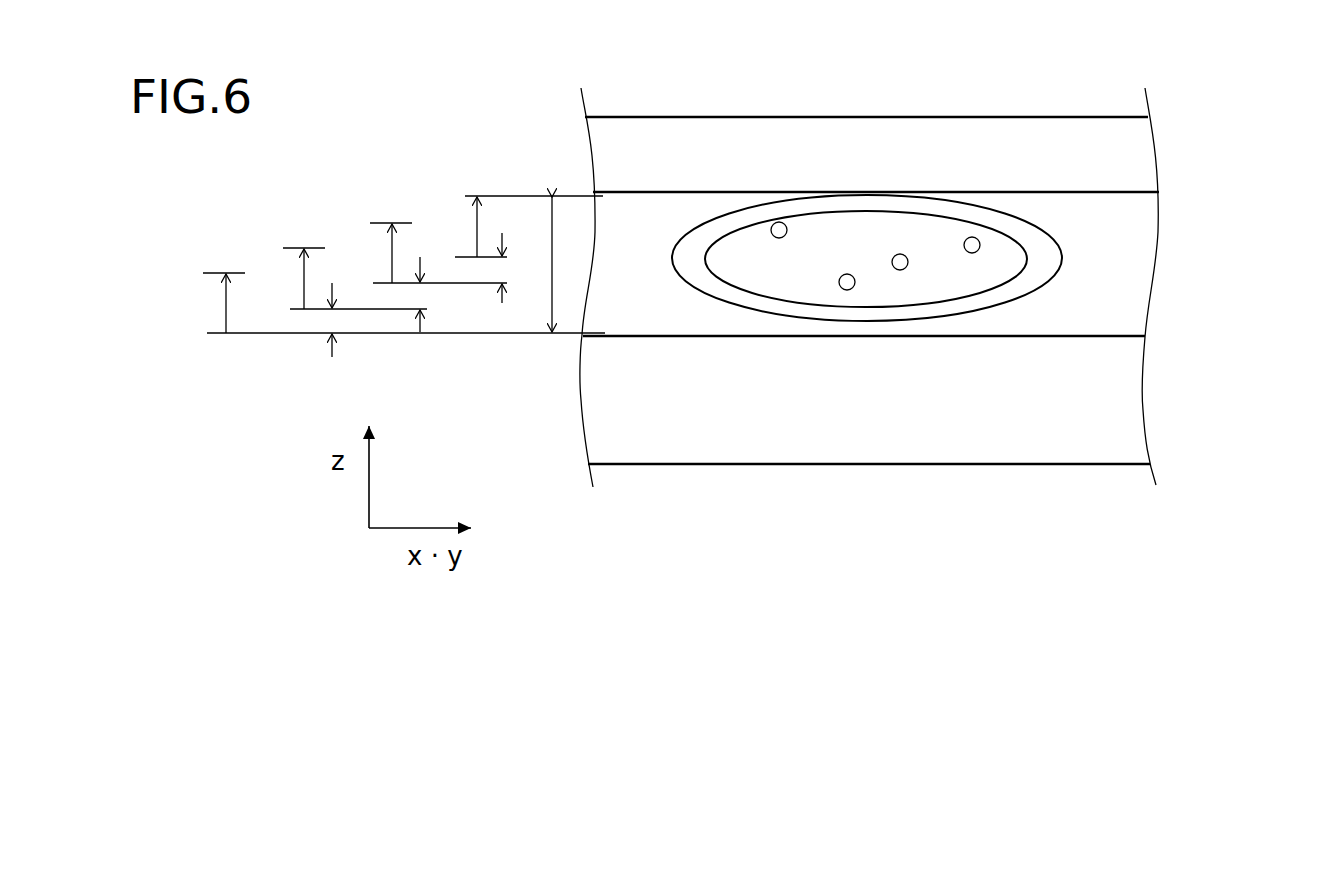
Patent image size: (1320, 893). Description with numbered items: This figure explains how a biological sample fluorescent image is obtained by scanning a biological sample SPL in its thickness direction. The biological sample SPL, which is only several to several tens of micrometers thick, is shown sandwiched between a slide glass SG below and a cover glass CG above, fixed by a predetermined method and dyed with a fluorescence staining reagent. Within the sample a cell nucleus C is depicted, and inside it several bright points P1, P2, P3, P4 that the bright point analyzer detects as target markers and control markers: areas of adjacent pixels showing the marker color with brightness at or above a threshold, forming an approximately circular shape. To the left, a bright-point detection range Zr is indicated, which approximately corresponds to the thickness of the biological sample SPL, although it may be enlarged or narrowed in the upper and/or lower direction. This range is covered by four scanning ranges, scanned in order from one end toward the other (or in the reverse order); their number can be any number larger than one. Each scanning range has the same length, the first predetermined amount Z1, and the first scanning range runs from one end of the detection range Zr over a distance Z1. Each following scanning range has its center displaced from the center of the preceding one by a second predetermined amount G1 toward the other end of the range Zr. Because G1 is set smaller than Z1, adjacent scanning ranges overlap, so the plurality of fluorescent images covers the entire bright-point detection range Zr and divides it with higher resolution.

The cell nuclei C is at (737, 233).
The bright point P1 is at (901, 254).
The bright point P2 is at (779, 222).
The bright point P3 is at (847, 290).
The bright point P4 is at (973, 237).
The cover glass CG is at (1145, 148).
The biological sample SPL is at (1178, 197).
The slide glass SG is at (1143, 410).
The first predetermined amount Z1 is at (331, 267).
The second predetermined amount G1 is at (438, 295).
The bright-point detection range Zr is at (570, 264).